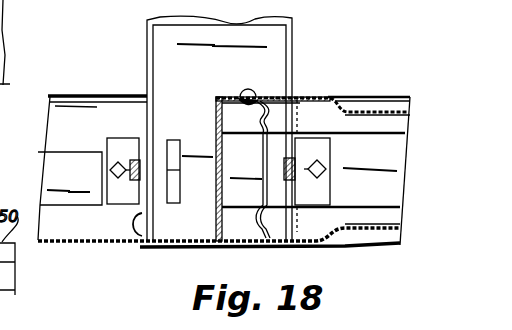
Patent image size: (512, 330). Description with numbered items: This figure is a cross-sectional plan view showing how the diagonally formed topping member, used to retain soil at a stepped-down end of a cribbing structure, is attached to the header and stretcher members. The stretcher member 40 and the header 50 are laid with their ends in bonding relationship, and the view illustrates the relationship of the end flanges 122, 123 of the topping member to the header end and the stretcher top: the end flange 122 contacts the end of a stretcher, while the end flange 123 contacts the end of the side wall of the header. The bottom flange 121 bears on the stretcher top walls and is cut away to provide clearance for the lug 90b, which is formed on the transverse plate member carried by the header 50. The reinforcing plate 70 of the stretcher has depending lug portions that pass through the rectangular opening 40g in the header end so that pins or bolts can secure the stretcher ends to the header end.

The header member 50 is at (157, 52).
The stretcher member 40 is at (110, 96).
The bottom flange 121 is at (50, 170).
The lug 90b is at (123, 150).
The end flange 122 is at (214, 140).
The reinforcing plate 70 is at (264, 153).
The rectangular opening 40g is at (176, 200).
The end flange 123 is at (136, 212).